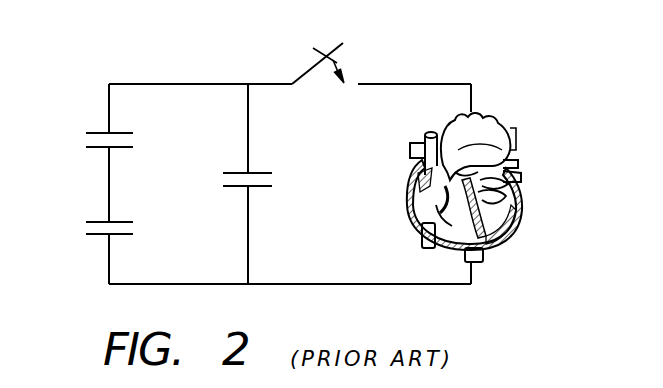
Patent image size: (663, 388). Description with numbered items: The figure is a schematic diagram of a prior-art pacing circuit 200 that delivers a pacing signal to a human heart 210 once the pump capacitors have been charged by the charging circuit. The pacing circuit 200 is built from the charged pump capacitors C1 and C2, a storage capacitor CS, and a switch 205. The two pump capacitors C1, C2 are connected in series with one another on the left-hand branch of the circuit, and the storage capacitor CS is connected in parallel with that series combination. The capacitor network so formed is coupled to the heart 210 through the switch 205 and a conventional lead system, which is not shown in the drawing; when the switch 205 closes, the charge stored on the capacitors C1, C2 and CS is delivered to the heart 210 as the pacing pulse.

The pacing circuit 200 is at (416, 52).
The switch 205 is at (343, 43).
The human heart 210 is at (522, 205).
The pump capacitor C1 is at (90, 145).
The pump capacitor C2 is at (89, 235).
The storage capacitor CS is at (230, 185).